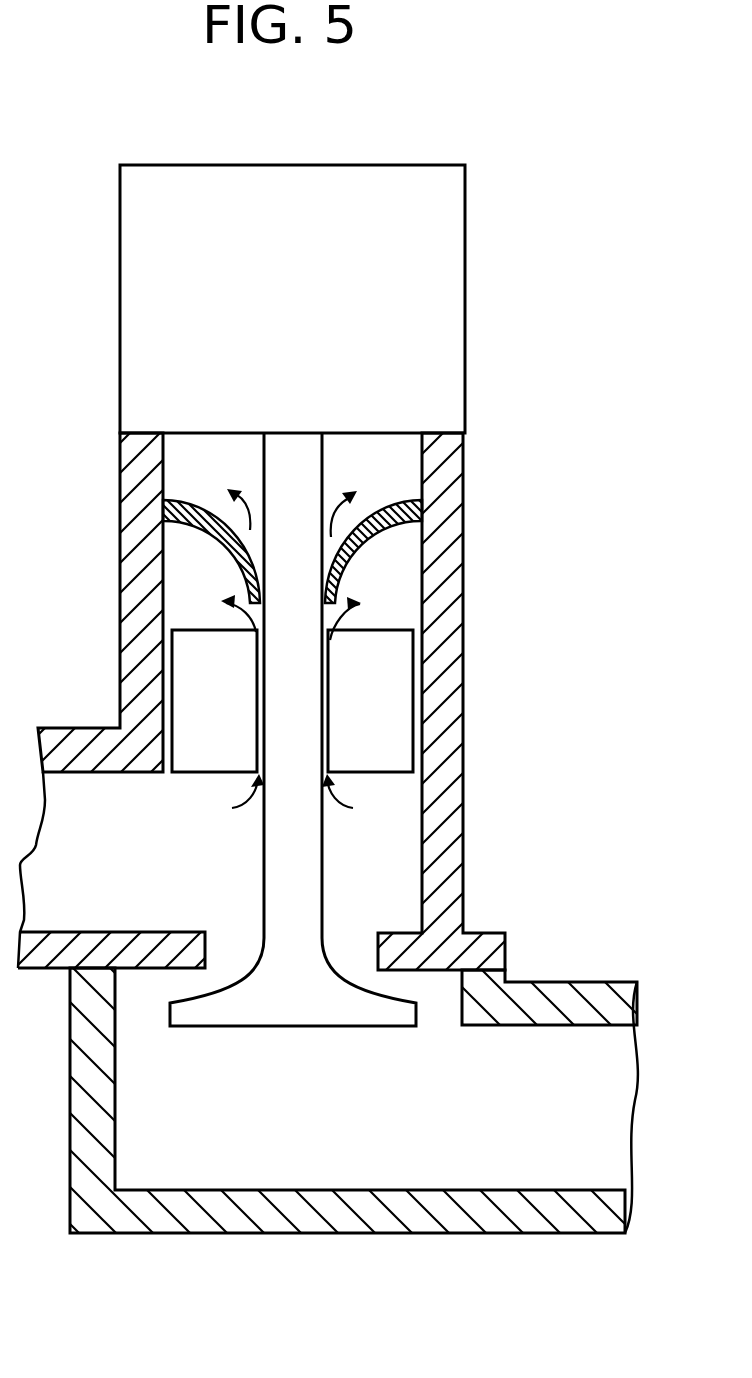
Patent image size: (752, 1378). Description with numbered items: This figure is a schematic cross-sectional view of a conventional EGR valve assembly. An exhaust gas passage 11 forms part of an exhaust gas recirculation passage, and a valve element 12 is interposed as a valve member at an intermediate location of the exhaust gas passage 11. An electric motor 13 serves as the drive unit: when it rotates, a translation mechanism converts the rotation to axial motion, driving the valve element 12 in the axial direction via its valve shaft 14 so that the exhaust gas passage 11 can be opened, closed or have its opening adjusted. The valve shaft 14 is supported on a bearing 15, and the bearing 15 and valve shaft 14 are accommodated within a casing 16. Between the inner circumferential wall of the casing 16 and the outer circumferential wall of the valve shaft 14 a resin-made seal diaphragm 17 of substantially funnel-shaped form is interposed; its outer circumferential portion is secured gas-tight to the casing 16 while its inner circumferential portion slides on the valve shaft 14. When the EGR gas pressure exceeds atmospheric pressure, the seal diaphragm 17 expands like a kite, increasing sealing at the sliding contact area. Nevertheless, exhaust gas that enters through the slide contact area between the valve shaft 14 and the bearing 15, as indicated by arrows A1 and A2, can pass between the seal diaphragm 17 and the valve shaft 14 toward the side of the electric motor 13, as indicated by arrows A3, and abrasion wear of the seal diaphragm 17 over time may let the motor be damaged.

The exhaust gas passage 11 is at (207, 1173).
The valve element 12 is at (330, 898).
The electric motor 13 is at (465, 293).
The valve shaft 14 is at (305, 853).
The bearing 15 is at (402, 707).
The casing 16 is at (465, 575).
The seal diaphragm 17 is at (366, 512).
The arrow A1 is at (291, 798).
The arrow A2 is at (292, 613).
The arrow A3 is at (285, 495).